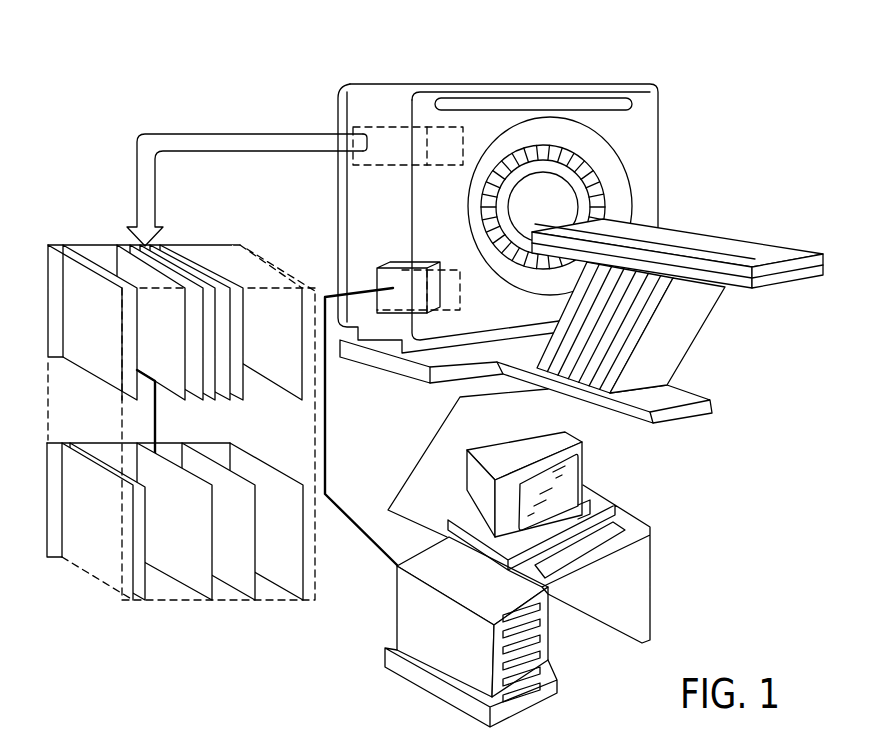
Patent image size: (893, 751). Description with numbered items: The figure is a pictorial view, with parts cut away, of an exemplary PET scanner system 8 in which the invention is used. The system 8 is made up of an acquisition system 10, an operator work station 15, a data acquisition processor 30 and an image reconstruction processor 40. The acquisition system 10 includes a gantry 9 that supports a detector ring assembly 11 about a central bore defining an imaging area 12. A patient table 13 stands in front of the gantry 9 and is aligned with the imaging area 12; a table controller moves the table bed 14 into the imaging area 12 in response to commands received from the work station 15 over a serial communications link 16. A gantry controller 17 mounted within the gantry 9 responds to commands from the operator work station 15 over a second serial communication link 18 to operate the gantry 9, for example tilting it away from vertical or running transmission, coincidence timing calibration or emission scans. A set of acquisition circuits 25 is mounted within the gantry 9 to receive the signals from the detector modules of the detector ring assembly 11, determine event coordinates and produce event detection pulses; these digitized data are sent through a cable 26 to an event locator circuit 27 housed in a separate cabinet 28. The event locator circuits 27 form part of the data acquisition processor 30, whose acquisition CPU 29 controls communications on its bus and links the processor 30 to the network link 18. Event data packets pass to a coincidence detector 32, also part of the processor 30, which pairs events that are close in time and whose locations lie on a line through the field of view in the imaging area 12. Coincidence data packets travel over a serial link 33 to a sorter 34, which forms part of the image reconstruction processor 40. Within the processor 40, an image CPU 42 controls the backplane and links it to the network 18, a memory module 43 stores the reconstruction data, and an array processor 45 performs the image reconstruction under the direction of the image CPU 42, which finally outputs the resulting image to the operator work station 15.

The PET scanner system 8 is at (478, 64).
The gantry 9 is at (642, 141).
The acquisition system 10 is at (668, 150).
The detector ring assembly 11 is at (613, 189).
The imaging area 12 is at (556, 212).
The patient table 13 is at (707, 341).
The table bed 14 is at (761, 258).
The operator work station 15 is at (650, 480).
The serial communications link 16 is at (426, 451).
The gantry controller 17 is at (390, 262).
The second serial communication link 18 is at (328, 404).
The acquisition circuits 25 is at (382, 122).
The cable 26 is at (200, 133).
The event locator circuit 27 is at (177, 339).
The cabinet 28 is at (221, 603).
The acquisition CPU 29 is at (290, 339).
The data acquisition processor 30 is at (98, 236).
The coincidence detector 32 is at (104, 339).
The serial link 33 is at (157, 419).
The sorter 34 is at (106, 544).
The image reconstruction processor 40 is at (95, 432).
The image CPU 42 is at (294, 544).
The memory module 43 is at (195, 544).
The array processor 45 is at (249, 544).